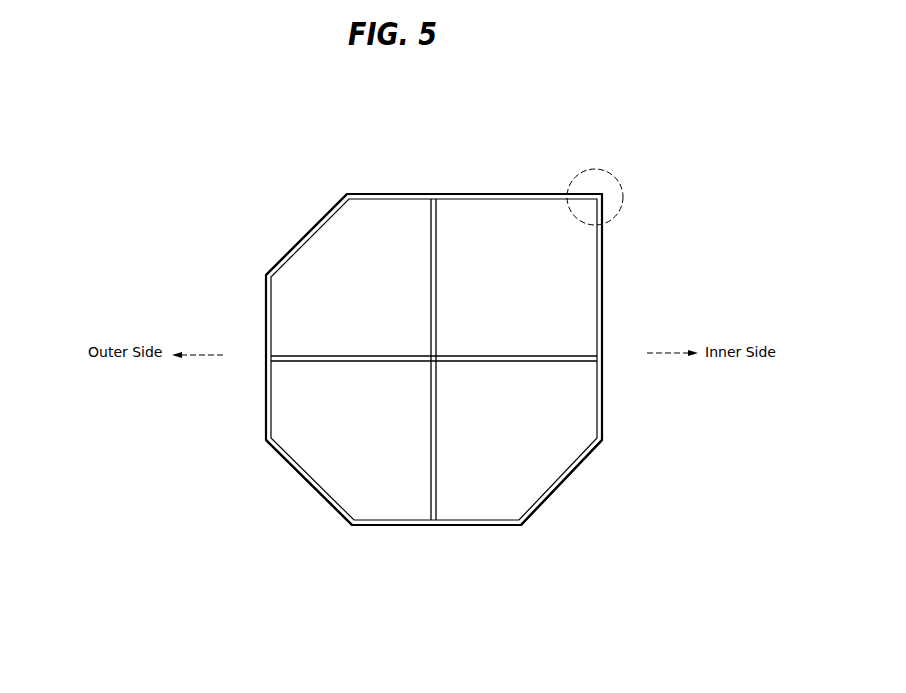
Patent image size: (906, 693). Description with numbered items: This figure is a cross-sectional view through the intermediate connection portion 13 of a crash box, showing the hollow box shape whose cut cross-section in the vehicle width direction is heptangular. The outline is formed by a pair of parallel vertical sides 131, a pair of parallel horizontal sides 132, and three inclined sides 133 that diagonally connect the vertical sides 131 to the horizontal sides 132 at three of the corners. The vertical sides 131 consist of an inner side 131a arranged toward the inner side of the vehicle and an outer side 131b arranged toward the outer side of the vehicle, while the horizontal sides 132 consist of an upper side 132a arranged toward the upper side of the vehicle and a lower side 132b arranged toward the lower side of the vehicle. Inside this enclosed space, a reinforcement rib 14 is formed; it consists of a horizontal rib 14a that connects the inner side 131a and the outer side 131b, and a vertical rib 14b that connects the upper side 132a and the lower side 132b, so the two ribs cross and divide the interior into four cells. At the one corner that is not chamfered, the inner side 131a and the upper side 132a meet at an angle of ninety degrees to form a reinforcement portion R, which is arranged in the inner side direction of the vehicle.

The intermediate connection portion 13 is at (340, 190).
The vertical sides 131 is at (475, 615).
The inner side 131a is at (595, 400).
The outer side 131b is at (272, 398).
The horizontal sides 132 is at (470, 126).
The upper side 132a is at (463, 194).
The lower side 132b is at (397, 520).
The inclined sides 133 is at (300, 238).
The reinforcement ribs 14 is at (489, 359).
The horizontal rib 14a is at (513, 358).
The vertical rib 14b is at (437, 273).
The reinforcement portion R is at (622, 182).